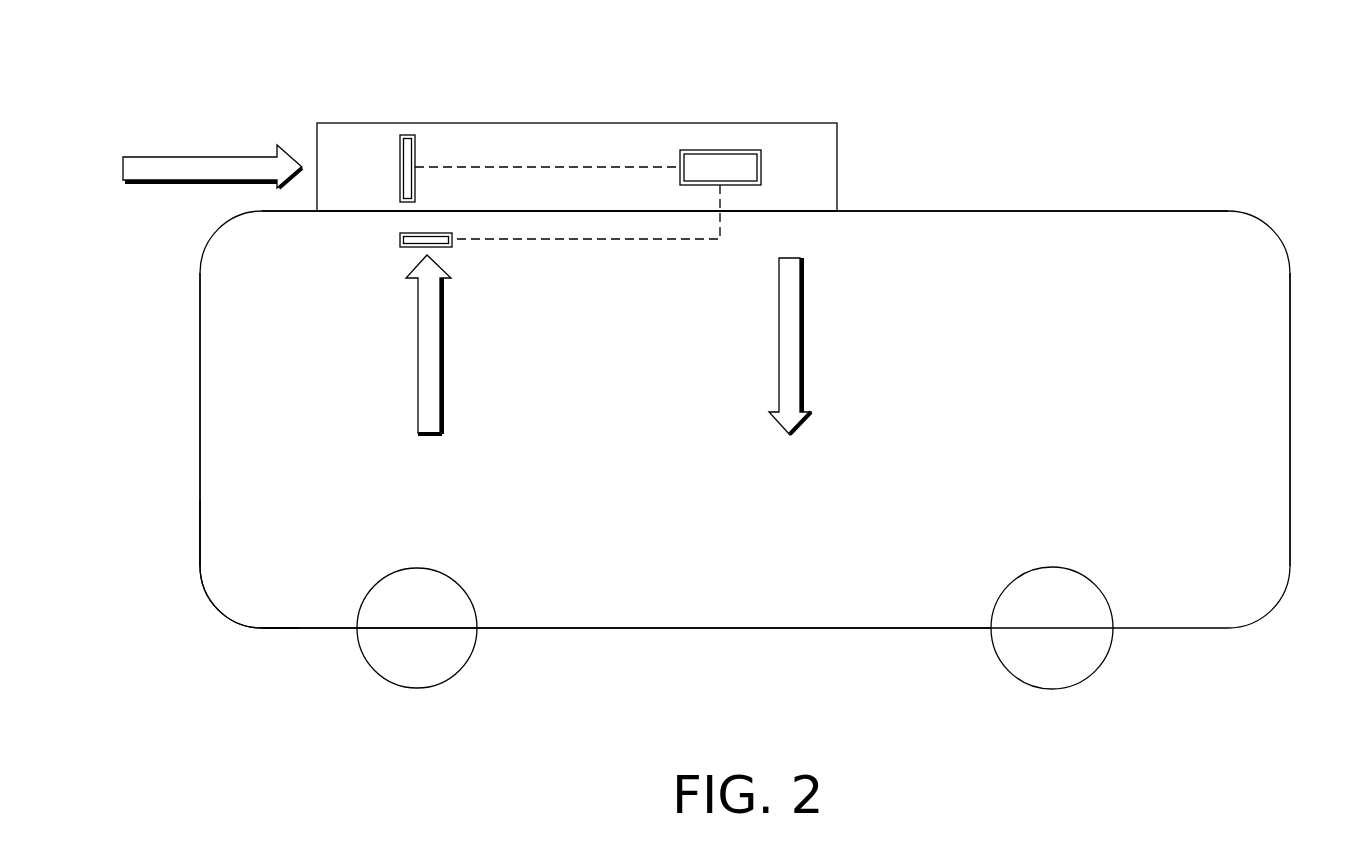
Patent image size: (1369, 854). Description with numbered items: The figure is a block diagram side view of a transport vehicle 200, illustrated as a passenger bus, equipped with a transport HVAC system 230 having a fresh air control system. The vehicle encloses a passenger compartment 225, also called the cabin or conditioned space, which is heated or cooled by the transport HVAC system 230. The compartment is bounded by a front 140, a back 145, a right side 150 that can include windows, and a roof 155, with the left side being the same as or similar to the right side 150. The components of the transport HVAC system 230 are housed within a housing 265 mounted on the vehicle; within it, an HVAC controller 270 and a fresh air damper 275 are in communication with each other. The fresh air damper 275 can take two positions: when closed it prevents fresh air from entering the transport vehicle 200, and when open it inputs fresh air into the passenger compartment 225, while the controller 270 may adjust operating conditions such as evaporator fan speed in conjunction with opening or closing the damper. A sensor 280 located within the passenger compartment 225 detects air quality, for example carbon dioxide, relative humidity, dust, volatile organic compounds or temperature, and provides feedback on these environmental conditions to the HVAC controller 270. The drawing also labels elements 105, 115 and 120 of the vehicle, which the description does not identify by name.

The transport vehicle 200 is at (1282, 86).
The vehicle 105 is at (797, 628).
The rear wheel 115 is at (1050, 670).
The front wheel 120 is at (413, 670).
The front 140 is at (1290, 420).
The back 145 is at (200, 420).
The right side 150 is at (310, 501).
The roof 155 is at (1030, 211).
The passenger compartment 225 is at (680, 572).
The transport HVAC system 230 is at (548, 167).
The housing 265 is at (837, 157).
The HVAC controller 270 is at (720, 150).
The fresh air damper 275 is at (400, 167).
The sensor 280 is at (400, 240).